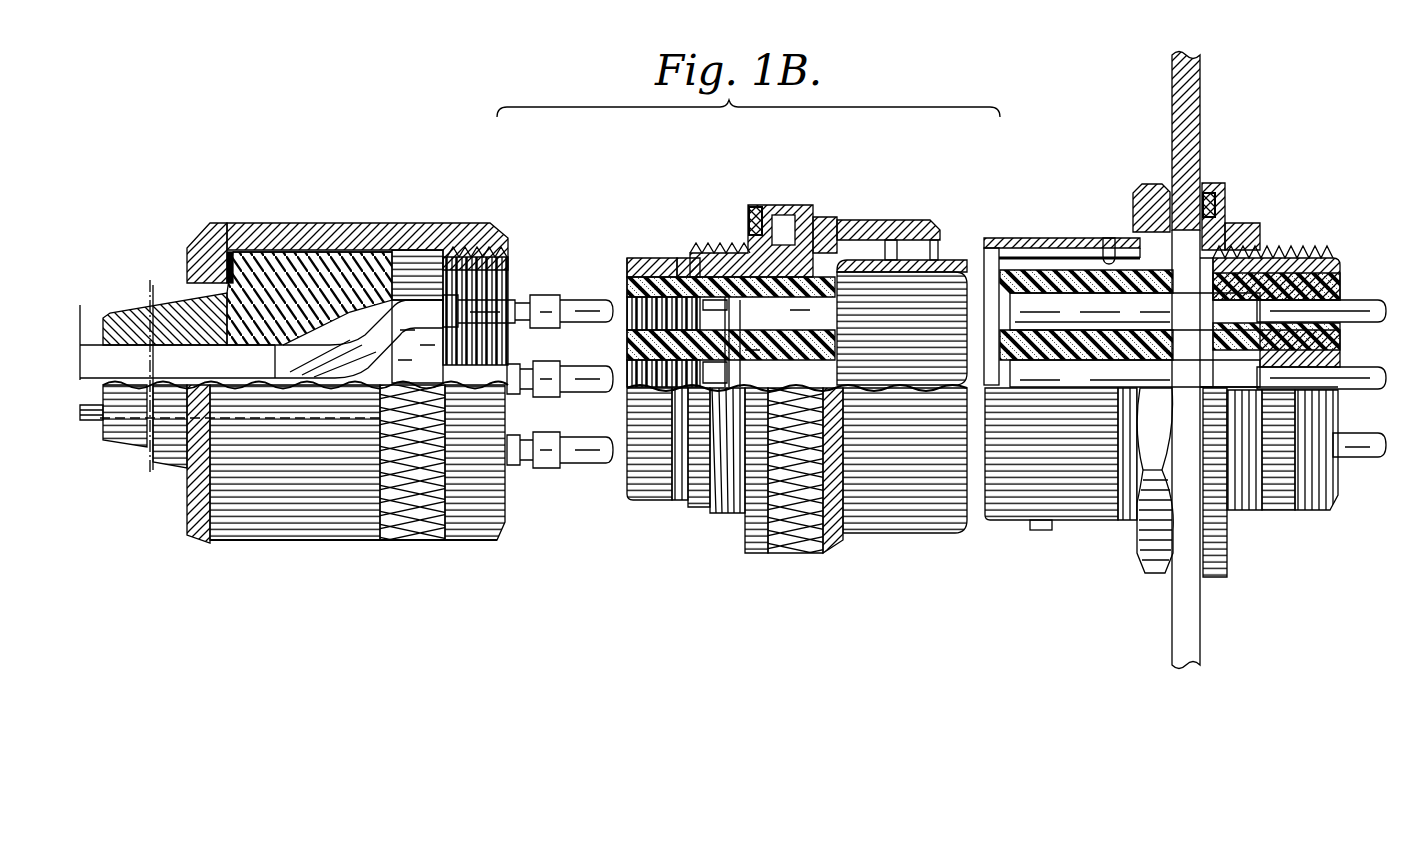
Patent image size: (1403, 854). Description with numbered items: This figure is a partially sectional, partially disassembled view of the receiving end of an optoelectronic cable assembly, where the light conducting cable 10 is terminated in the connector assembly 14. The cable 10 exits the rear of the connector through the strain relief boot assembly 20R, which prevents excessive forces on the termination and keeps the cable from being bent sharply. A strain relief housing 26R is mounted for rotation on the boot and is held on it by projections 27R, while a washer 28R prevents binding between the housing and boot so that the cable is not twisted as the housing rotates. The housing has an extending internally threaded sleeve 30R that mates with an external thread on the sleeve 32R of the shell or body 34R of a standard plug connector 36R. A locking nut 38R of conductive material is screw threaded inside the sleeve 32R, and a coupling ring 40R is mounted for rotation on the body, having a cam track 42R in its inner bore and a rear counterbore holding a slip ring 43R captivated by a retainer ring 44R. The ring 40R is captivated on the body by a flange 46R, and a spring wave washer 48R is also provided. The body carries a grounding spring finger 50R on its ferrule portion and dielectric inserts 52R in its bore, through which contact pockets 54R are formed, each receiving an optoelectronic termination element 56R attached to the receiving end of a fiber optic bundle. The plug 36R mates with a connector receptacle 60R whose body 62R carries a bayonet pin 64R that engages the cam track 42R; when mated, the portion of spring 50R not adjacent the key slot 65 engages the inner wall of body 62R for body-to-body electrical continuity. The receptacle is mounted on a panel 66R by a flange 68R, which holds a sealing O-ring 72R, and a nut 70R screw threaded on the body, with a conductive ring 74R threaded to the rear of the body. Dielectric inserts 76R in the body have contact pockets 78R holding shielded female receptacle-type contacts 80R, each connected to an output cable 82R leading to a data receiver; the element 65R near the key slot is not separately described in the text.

The light conducting cable 10 is at (95, 432).
The connector assembly 14 is at (553, 270).
The strain relief boot assembly 20R is at (113, 312).
The strain relief housing 26R is at (410, 226).
The projections 27R is at (203, 266).
The washer 28R is at (228, 223).
The internally threaded sleeve 30R is at (485, 222).
The sleeve 32R is at (730, 250).
The shell or body 34R is at (745, 232).
The plug connector 36R is at (800, 195).
The locking nut 38R is at (643, 255).
The coupling ring 40R is at (857, 262).
The cam track 42R is at (900, 245).
The slip ring 43R is at (750, 212).
The retainer ring 44R is at (750, 222).
The flange 46R is at (848, 223).
The spring wave washer 48R is at (812, 228).
The grounding spring finger 50R is at (870, 253).
The dielectric inserts 52R is at (626, 292).
The contact pockets 54R is at (710, 305).
The optoelectronic termination element 56R is at (547, 428).
The connector receptacle 60R is at (1040, 203).
The receptacle body 62R is at (1138, 218).
The bayonet pin 64R is at (1043, 531).
The key slot 65 is at (1065, 252).
The fastener 65R is at (1108, 258).
The panel 66R is at (1203, 73).
The flange 68R is at (1207, 187).
The nut 70R is at (1152, 558).
The sealing O-ring 72R is at (1212, 198).
The conductive ring 74R is at (1310, 252).
The dielectric inserts 76R is at (682, 263).
The contact pockets 78R is at (1033, 297).
The shielded female receptacle-type contact 80R is at (1017, 373).
The output cable 82R is at (1370, 438).